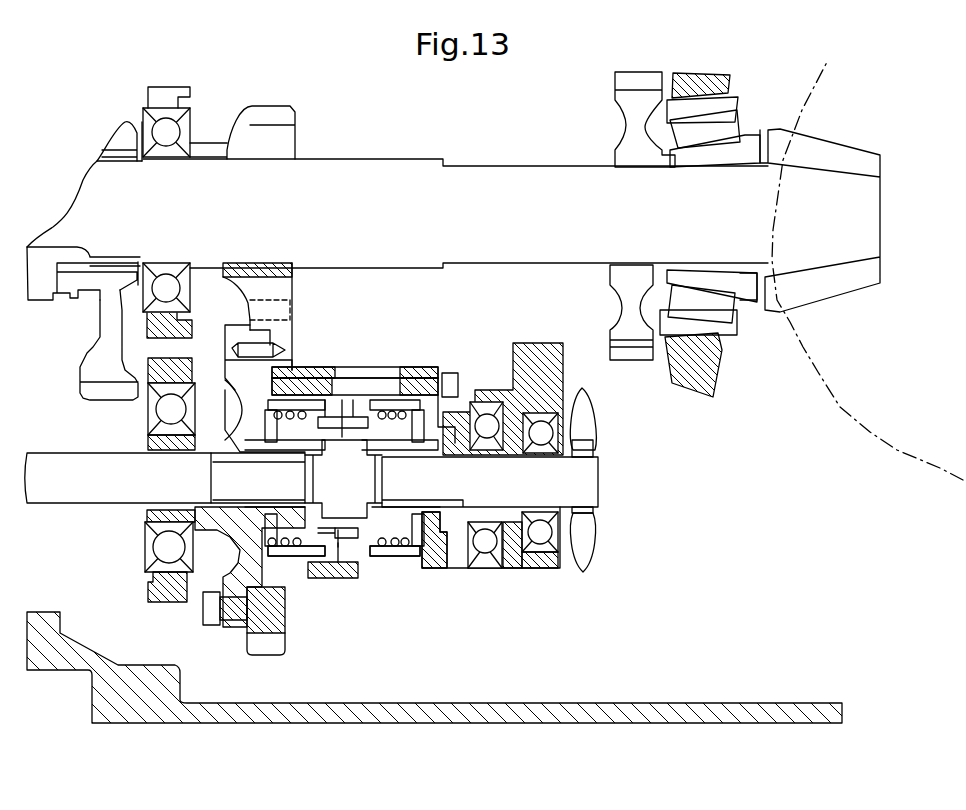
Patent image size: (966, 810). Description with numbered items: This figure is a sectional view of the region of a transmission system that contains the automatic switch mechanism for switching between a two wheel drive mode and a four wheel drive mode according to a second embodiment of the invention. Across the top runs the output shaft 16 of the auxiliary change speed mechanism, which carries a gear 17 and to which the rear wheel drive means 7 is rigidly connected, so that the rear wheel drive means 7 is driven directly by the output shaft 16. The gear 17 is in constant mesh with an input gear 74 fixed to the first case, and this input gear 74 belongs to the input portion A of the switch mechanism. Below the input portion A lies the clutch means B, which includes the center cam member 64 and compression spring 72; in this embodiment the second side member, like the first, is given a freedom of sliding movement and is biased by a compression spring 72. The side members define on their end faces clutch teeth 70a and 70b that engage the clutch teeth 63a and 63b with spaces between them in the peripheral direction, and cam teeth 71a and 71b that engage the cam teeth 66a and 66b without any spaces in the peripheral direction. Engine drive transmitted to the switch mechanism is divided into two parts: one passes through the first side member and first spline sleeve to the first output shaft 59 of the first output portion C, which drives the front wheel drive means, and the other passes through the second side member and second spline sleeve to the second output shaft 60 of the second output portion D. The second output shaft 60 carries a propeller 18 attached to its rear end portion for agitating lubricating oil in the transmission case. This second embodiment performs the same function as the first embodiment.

The rear wheel drive means 7 is at (583, 152).
The output shaft 16 is at (344, 168).
The gear 17 is at (300, 130).
The propeller 18 is at (590, 560).
The first output shaft 59 is at (82, 498).
The second output shaft 60 is at (588, 483).
The center cam member 64 is at (343, 479).
The compression spring 72 is at (291, 408).
The input gear 74 is at (299, 325).
The input portion A is at (333, 363).
The clutch means B is at (347, 403).
The first output portion C is at (316, 462).
The second output portion D is at (372, 462).
The clutch teeth 63a is at (350, 587).
The clutch teeth 70a is at (327, 540).
The clutch teeth 63b is at (443, 613).
The clutch teeth 70b is at (367, 553).
The cam teeth 66a is at (317, 621).
The cam teeth 71a is at (293, 542).
The cam teeth 66b is at (452, 580).
The cam teeth 71b is at (393, 550).